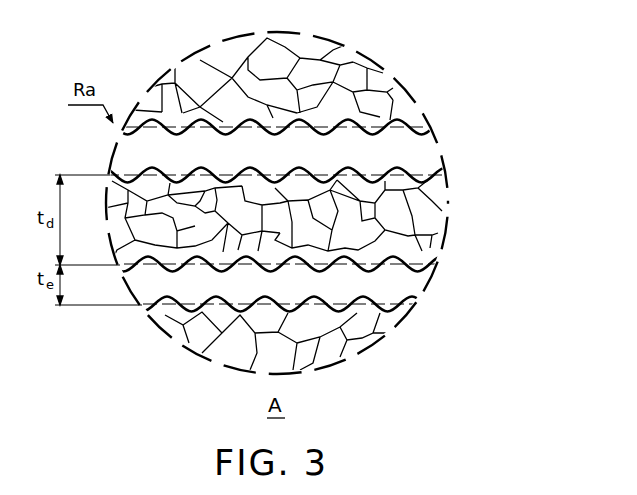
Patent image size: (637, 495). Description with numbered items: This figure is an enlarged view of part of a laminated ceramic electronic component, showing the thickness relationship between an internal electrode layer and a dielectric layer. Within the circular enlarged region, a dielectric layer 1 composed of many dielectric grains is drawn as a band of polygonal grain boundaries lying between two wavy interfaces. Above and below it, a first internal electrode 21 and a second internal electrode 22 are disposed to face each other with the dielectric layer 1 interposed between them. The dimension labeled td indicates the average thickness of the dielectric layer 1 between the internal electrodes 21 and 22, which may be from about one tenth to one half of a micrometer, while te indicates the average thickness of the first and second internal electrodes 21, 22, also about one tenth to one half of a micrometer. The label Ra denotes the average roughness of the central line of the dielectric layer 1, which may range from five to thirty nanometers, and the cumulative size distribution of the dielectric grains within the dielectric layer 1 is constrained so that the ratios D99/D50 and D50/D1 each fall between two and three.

The dielectric layer 1 is at (405, 90).
The first internal electrode 21 is at (427, 157).
The second internal electrode 22 is at (405, 282).